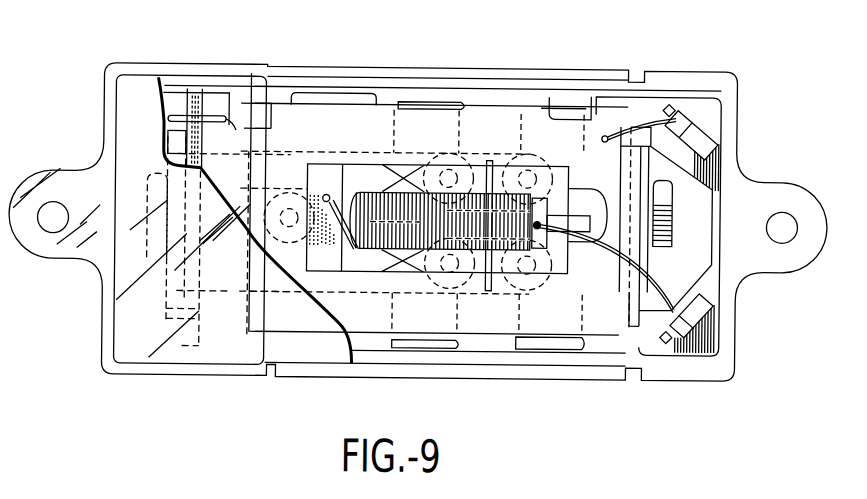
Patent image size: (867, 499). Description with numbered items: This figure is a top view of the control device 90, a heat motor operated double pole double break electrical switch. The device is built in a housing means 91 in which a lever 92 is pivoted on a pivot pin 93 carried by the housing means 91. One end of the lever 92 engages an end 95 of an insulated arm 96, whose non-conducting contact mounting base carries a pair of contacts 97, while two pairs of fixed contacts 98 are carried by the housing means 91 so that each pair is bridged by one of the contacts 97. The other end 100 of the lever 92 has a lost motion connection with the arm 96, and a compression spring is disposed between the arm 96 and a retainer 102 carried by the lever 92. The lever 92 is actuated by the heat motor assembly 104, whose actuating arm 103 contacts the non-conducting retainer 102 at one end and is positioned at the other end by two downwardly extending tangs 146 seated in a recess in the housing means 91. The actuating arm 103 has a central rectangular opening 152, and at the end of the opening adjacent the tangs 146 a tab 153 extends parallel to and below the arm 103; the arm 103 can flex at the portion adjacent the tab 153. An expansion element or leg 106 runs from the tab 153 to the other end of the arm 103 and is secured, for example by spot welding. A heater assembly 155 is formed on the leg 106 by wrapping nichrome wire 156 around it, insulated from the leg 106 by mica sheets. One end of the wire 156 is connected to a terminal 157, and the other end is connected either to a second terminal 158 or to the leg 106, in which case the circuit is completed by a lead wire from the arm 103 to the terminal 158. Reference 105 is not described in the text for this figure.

The control device 90 is at (612, 35).
The housing means 91 is at (735, 177).
The lever 92 is at (244, 142).
The pivot pin 93 is at (203, 97).
The end of insulated arm 95 is at (240, 338).
The insulated arm 96 is at (345, 336).
The contacts 97 is at (474, 153).
The fixed contacts 98 is at (448, 163).
The other end of lever 100 is at (343, 149).
The retainer 102 is at (282, 133).
The actuating arm 103 is at (422, 119).
The heat motor assembly 104 is at (617, 171).
The tab 105 is at (272, 117).
The expansion element or leg 106 is at (328, 192).
The tangs 146 is at (640, 116).
The central rectangular opening 152 is at (548, 228).
The tab 153 is at (575, 267).
The heater assembly 155 is at (385, 173).
The nichrome wire 156 is at (366, 191).
The terminal 157 is at (734, 293).
The second terminal 158 is at (700, 119).